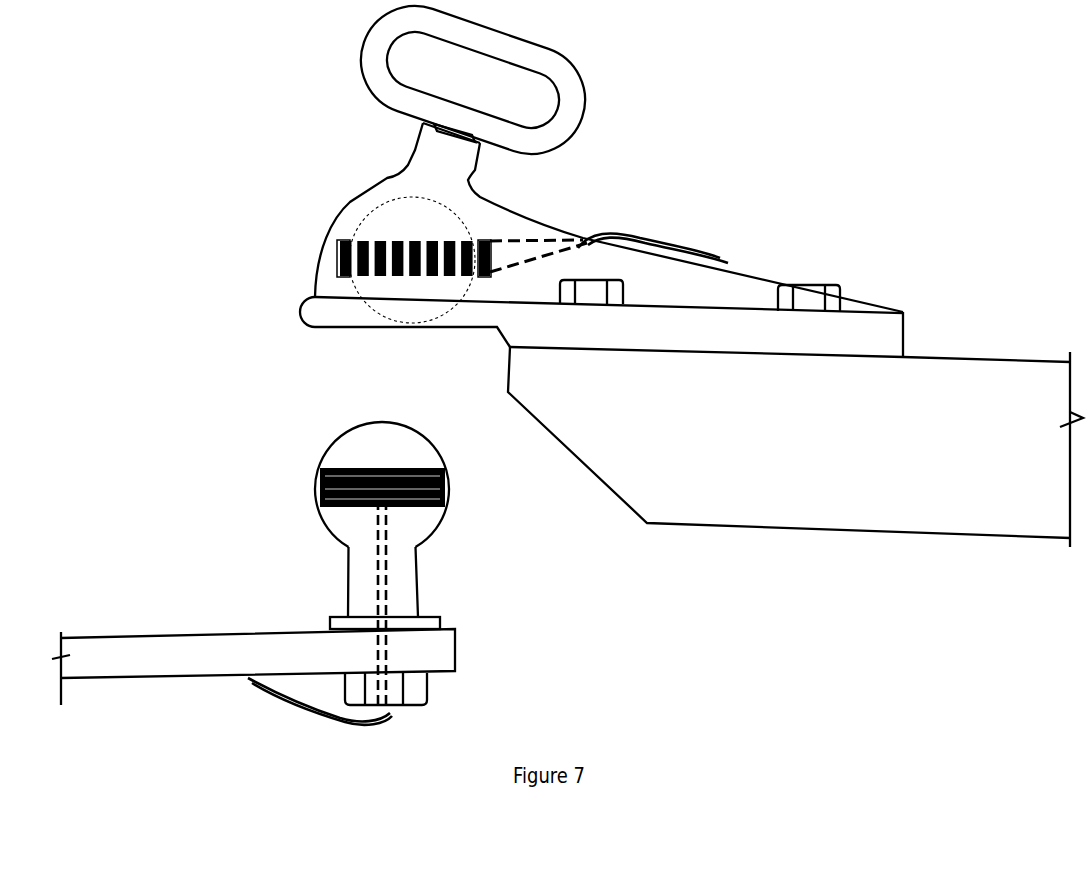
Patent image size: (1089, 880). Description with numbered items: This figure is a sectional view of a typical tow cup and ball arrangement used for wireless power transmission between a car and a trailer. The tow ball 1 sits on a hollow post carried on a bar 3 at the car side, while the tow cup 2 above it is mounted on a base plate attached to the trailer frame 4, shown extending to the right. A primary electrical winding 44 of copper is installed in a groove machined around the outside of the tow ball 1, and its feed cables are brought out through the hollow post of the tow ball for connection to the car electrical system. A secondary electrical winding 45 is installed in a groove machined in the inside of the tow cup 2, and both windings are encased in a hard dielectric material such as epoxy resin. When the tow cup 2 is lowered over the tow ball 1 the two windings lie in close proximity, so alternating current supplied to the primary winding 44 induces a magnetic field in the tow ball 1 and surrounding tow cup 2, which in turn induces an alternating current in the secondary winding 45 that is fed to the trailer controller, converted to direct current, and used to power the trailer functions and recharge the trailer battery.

The tow ball 1 is at (362, 448).
The tow cup 2 is at (347, 201).
The drawbar 3 is at (275, 655).
The trailer frame 4 is at (806, 534).
The primary electrical winding 44 is at (318, 490).
The secondary electrical winding 45 is at (350, 258).